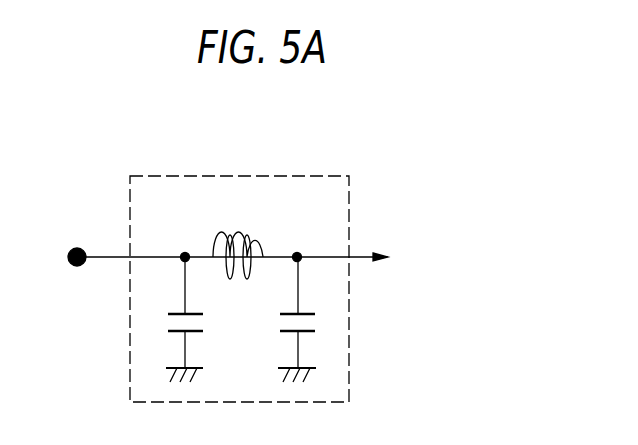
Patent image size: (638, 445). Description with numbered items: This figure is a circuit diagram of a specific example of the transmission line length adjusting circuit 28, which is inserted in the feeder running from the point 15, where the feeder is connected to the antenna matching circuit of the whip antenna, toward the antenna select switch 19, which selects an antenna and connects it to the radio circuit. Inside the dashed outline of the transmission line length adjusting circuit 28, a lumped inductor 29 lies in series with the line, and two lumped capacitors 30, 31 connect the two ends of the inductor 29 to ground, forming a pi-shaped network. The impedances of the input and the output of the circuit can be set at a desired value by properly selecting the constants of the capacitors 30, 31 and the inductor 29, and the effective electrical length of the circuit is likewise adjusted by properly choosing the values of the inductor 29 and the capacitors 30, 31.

The point 15 is at (77, 247).
The transmission line length adjusting circuit 28 is at (331, 175).
The lumped inductor 29 is at (238, 232).
The lumped capacitor 30 is at (170, 322).
The lumped capacitor 31 is at (310, 322).
The antenna select switch 19 is at (417, 258).